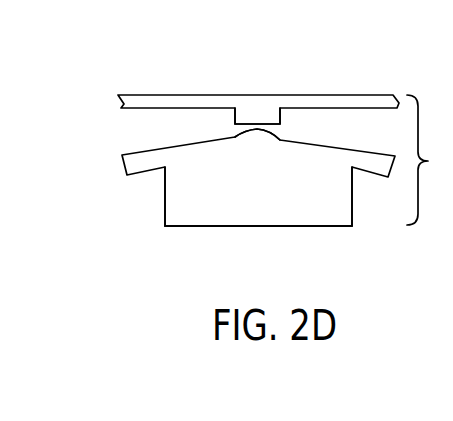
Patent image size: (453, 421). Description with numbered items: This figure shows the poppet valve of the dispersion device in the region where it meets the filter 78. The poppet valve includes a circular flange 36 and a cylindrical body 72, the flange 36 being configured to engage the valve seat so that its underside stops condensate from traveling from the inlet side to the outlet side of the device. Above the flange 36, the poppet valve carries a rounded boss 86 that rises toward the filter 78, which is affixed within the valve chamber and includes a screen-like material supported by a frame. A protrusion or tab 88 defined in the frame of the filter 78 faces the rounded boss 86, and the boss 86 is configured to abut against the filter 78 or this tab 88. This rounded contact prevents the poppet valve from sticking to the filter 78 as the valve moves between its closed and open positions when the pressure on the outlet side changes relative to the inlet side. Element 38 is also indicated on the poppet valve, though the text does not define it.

The filter 78 is at (258, 93).
The protrusion/tab 88 is at (267, 113).
The rounded boss 86 is at (237, 137).
The flange 36 is at (122, 165).
The stem / base portion 38 is at (164, 197).
The cylindrical body 72 is at (182, 228).